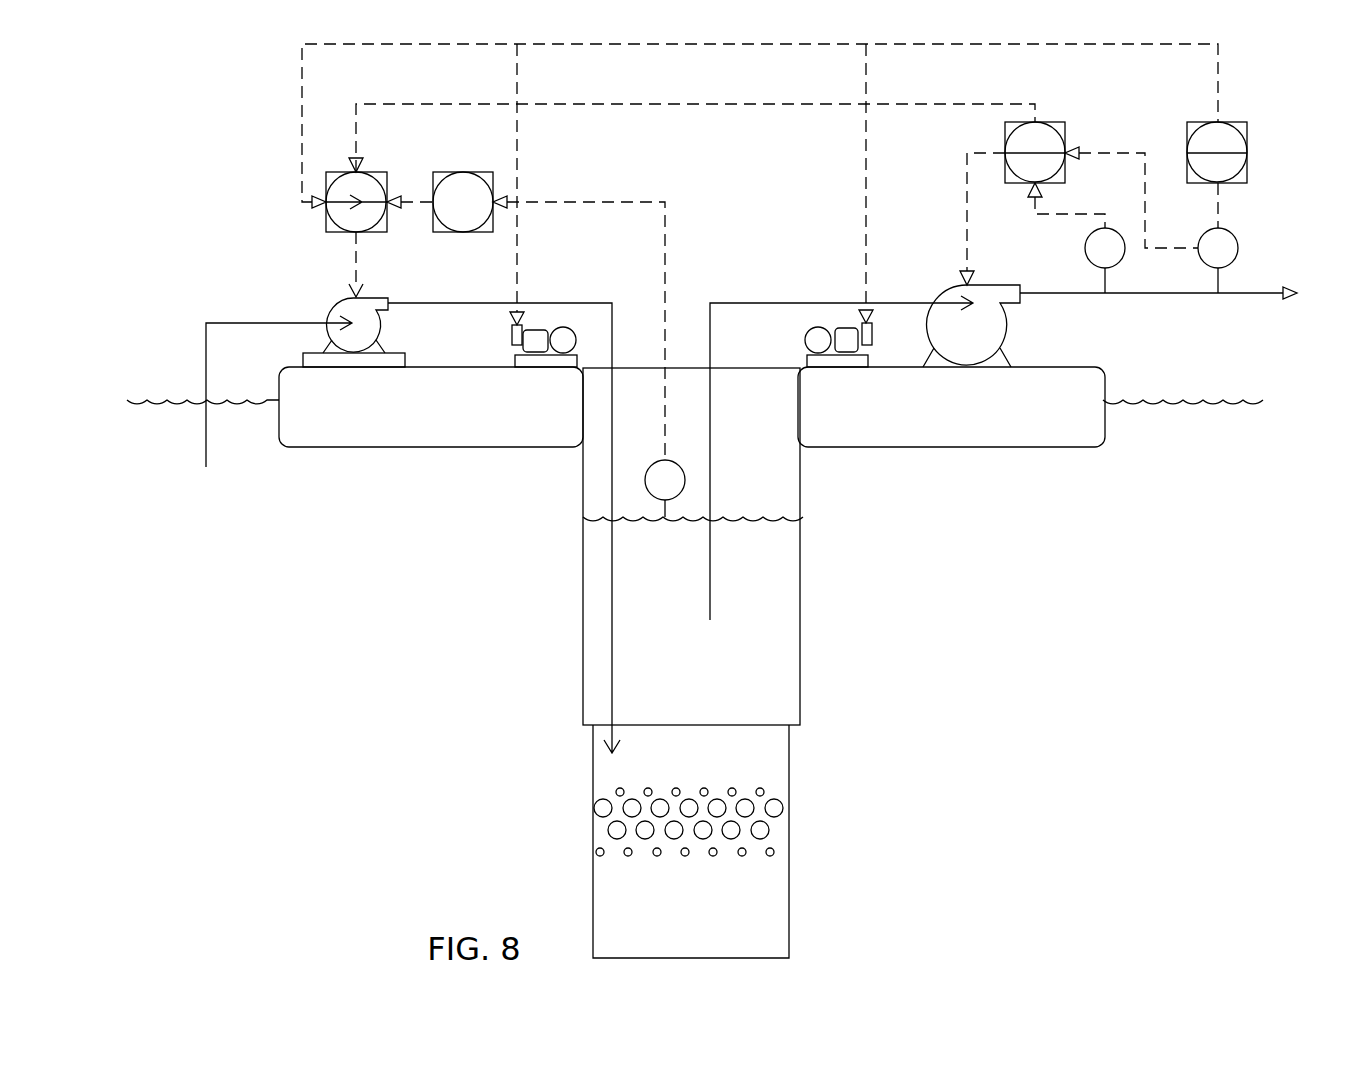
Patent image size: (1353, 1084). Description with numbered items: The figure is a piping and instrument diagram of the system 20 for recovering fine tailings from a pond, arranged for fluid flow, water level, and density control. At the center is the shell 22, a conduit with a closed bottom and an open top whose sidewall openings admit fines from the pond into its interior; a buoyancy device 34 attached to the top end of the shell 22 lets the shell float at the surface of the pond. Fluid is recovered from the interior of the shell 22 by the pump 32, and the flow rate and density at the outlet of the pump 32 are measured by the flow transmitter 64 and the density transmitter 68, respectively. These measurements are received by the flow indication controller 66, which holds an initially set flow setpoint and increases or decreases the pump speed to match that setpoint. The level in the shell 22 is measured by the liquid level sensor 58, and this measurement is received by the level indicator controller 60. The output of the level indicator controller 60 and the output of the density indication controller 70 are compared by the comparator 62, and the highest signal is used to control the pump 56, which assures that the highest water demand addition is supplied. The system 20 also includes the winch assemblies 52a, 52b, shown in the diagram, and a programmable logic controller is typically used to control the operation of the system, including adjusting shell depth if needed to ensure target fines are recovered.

The system 20 is at (131, 207).
The shell 22 is at (800, 627).
The pump 32 is at (1007, 325).
The buoyancy device 34 is at (952, 445).
The winch assembly 52a is at (536, 330).
The winch assembly 52b is at (843, 328).
The pump 56 is at (358, 367).
The liquid level sensor 58 is at (685, 480).
The level indicator controller 60 is at (463, 172).
The comparator 62 is at (332, 170).
The flow transmitter 64 is at (1120, 293).
The flow indication controller 66 is at (1065, 135).
The density transmitter 68 is at (1238, 242).
The density indication controller 70 is at (1247, 135).